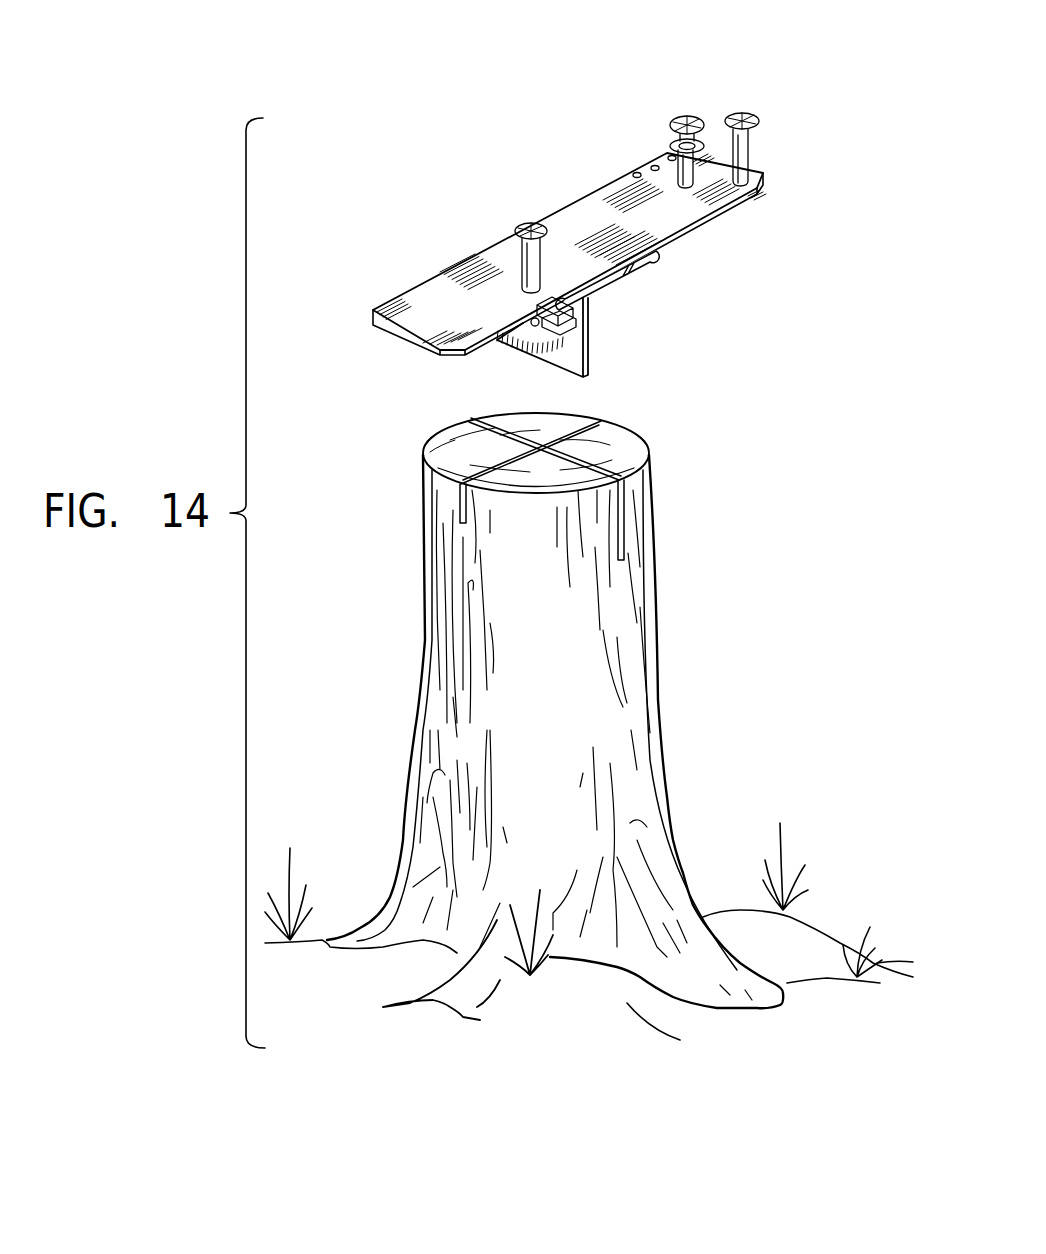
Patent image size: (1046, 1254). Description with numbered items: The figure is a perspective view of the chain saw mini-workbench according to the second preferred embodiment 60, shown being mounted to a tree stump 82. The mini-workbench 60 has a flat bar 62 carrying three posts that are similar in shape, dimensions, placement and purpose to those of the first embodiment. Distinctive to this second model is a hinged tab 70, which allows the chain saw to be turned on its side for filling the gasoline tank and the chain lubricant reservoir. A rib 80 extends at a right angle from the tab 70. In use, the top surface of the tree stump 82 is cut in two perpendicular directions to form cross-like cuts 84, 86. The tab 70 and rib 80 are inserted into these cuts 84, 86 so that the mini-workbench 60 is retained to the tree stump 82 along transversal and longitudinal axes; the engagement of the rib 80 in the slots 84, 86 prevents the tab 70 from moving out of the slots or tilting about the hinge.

The mini-workbench according to the second preferred embodiment 60 is at (563, 112).
The flat bar 62 is at (468, 258).
The hinged tab 70 is at (588, 330).
The rib 80 is at (518, 334).
The tree stump 82 is at (653, 665).
The cross-like cut 84 is at (623, 512).
The cross-like cut 86 is at (575, 417).